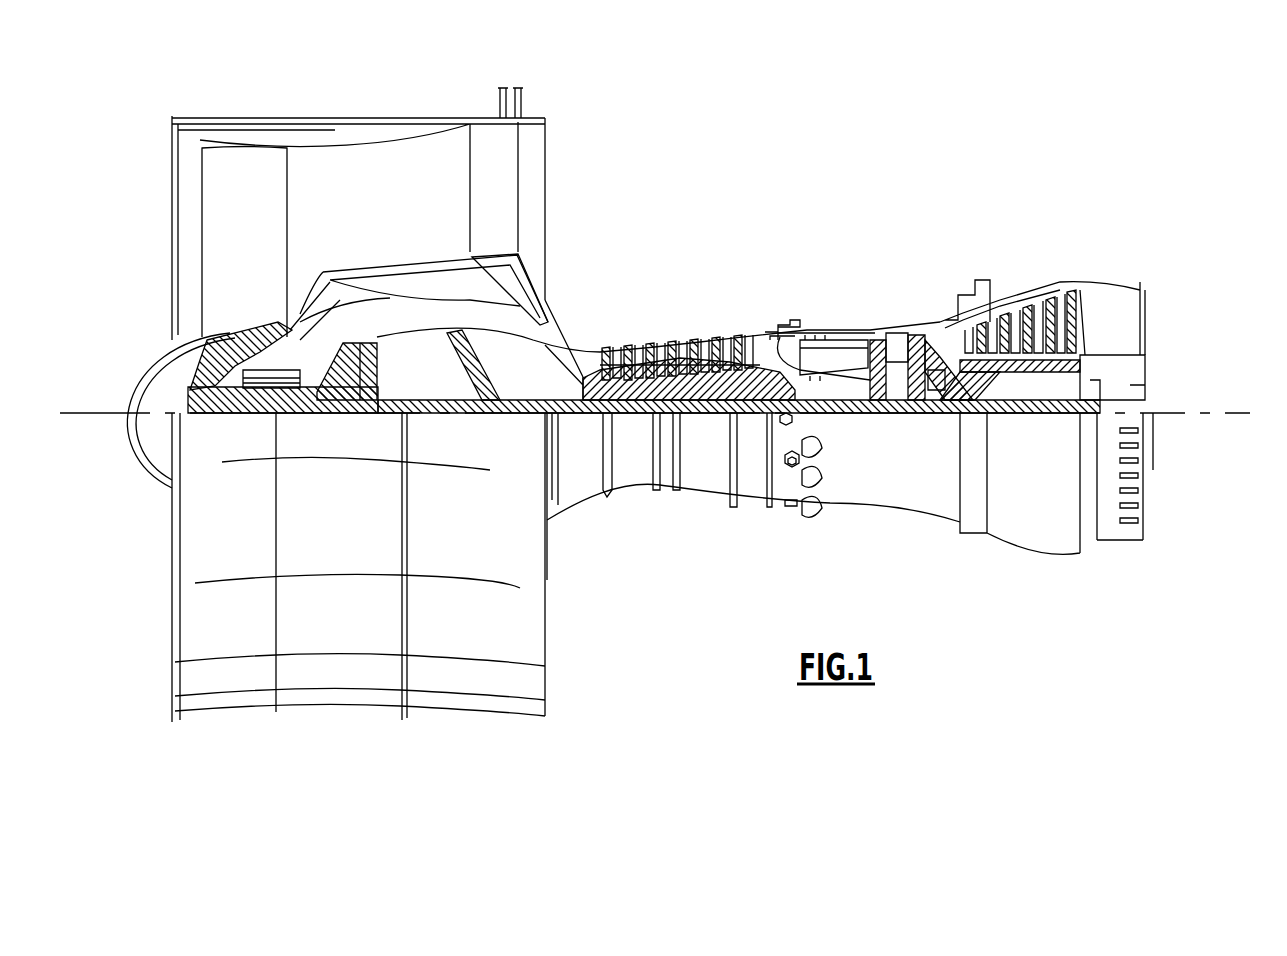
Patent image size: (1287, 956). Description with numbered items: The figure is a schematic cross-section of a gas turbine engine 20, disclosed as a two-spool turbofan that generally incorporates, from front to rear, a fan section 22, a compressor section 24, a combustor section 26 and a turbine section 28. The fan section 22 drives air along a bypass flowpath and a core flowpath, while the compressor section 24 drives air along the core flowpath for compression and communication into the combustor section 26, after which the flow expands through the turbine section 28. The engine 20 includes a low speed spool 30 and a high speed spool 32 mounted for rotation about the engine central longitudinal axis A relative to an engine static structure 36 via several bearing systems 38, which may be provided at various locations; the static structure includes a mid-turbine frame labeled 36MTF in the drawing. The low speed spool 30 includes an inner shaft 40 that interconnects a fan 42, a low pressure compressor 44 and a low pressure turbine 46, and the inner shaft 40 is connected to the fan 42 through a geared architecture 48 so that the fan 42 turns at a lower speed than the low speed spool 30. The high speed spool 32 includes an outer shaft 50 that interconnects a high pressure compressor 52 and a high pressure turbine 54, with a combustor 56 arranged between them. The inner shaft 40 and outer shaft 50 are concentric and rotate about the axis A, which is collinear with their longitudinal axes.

The gas turbine engine 20 is at (845, 165).
The fan section 22 is at (284, 118).
The compressor section 24 is at (592, 327).
The combustor section 26 is at (823, 306).
The turbine section 28 is at (980, 270).
The low speed spool 30 is at (711, 420).
The high speed spool 32 is at (752, 338).
The engine static structure 36 is at (750, 503).
The mid-turbine frame 36MTF is at (944, 324).
The bearing systems 38 is at (503, 397).
The inner shaft 40 is at (572, 430).
The fan 42 is at (256, 253).
The low pressure compressor 44 is at (478, 312).
The low pressure turbine 46 is at (1024, 300).
The geared architecture 48 is at (367, 397).
The outer shaft 50 is at (843, 412).
The high pressure compressor 52 is at (683, 372).
The high pressure turbine 54 is at (892, 335).
The combustor 56 is at (832, 355).
The engine central longitudinal axis A is at (1243, 413).